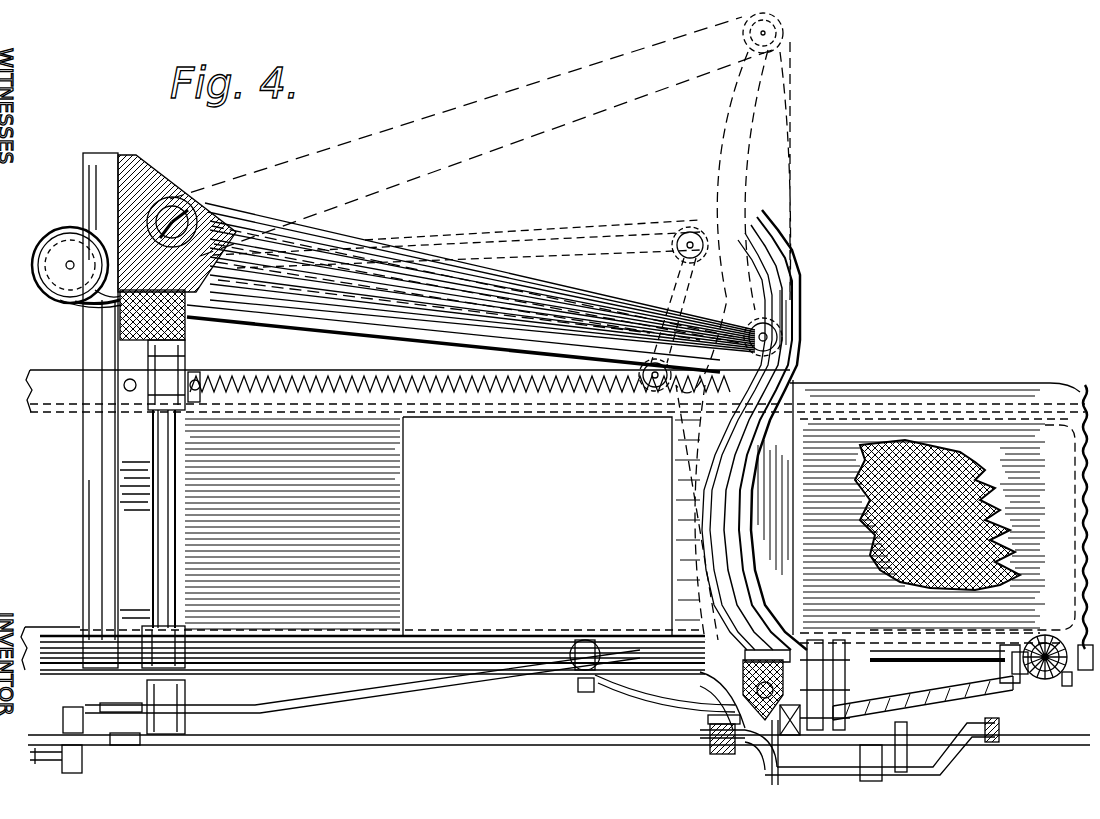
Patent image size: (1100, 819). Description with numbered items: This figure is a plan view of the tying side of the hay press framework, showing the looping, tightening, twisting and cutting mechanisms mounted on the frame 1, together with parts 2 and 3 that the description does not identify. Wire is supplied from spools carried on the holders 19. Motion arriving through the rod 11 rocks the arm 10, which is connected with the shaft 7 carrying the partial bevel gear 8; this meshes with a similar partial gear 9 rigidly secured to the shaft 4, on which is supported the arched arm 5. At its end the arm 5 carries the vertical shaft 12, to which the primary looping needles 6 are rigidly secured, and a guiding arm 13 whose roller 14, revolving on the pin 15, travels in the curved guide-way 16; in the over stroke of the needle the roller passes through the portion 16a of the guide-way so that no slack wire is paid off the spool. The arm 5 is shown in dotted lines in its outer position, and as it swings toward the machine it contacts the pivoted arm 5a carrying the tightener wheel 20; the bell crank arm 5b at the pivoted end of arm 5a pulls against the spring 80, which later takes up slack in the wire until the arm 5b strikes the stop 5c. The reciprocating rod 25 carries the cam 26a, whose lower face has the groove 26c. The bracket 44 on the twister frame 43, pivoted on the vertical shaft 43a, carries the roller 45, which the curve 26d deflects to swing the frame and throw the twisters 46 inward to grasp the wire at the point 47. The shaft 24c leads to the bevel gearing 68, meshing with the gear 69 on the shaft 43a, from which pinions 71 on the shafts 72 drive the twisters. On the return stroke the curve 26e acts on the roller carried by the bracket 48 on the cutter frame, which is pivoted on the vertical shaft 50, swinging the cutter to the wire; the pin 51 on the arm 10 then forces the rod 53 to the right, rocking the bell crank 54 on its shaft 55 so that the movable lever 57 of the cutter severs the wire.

The frame 1 is at (45, 370).
The post 2 is at (84, 170).
The bracket 3 is at (148, 190).
The shaft 4 is at (190, 215).
The arm 5 is at (387, 126).
The pivoted arm 5a is at (470, 232).
The bell crank arm 5b is at (190, 360).
The stop 5c is at (232, 390).
The primary looping needle 6 is at (745, 170).
The shaft 7 is at (155, 490).
The partial bevel gear 8 is at (110, 336).
The partial gear 9 is at (88, 308).
The arm 10 is at (130, 746).
The rod 11 is at (52, 763).
The vertical shaft 12 is at (768, 36).
The guiding arm 13 is at (792, 217).
The roller 14 is at (800, 280).
The pin 15 is at (795, 300).
The curved guide-way 16 is at (782, 338).
The portion of guide-way 16a is at (798, 258).
The holder 19 is at (33, 266).
The tightener wheel 20 is at (682, 256).
The shaft 24c is at (64, 658).
The rod 25 is at (537, 746).
The cam 26a is at (710, 748).
The groove 26c is at (975, 722).
The curve 26d is at (950, 768).
The curve 26e is at (760, 770).
The twister frame 43 is at (1057, 660).
The vertical shaft 43a is at (1062, 625).
The bracket 44 is at (905, 772).
The roller 45 is at (846, 780).
The twister 46 is at (846, 690).
The roller 47 is at (712, 728).
The bracket 48 is at (735, 708).
The vertical shaft 50 is at (572, 678).
The pin 51 is at (118, 703).
The rod 53 is at (410, 704).
The bell crank 54 is at (640, 708).
The shaft 55 is at (588, 692).
The movable lever 57 is at (777, 735).
The bevel gearing 68 is at (1085, 672).
The gear 69 is at (1058, 678).
The pinion 71 is at (1068, 690).
The shaft 72 is at (1022, 695).
The spring 80 is at (320, 380).